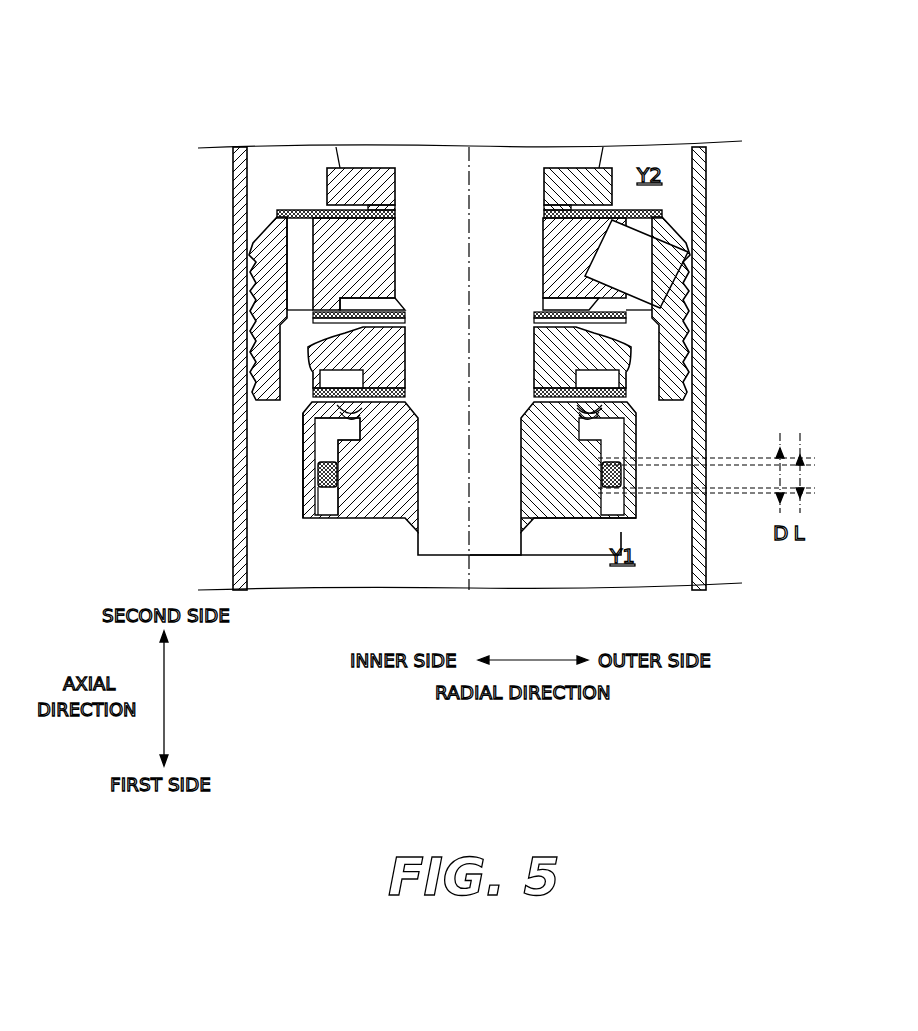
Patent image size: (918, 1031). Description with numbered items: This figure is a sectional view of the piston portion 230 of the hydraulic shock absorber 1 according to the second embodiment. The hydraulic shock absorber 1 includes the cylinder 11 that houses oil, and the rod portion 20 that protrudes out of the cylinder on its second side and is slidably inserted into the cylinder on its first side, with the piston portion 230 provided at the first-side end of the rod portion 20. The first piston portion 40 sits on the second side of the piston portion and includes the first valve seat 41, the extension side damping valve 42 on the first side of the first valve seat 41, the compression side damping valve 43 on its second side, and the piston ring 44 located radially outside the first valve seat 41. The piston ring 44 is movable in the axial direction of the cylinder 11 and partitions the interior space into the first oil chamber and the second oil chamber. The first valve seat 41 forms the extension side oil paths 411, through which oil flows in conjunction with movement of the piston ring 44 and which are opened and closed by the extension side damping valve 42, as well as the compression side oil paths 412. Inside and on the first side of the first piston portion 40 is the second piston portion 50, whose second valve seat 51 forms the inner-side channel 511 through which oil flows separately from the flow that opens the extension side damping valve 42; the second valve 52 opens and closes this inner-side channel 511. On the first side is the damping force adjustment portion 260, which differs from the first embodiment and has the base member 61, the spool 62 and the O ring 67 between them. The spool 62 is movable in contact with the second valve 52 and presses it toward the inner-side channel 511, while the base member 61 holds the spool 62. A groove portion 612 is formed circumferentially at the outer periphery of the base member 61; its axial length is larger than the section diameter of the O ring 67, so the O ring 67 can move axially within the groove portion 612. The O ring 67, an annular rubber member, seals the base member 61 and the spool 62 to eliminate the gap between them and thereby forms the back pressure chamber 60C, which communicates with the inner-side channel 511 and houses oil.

The hydraulic shock absorber 1 is at (200, 65).
The cylinder 11 is at (705, 200).
The rod portion 20 is at (430, 160).
The piston portion 230 is at (268, 160).
The first piston portion 40 is at (460, 285).
The first valve seat 41 is at (267, 313).
The extension side oil path 411 is at (692, 267).
The compression side oil path 412 is at (297, 278).
The extension side damping valve 42 is at (695, 300).
The compression side damping valve 43 is at (660, 213).
The piston ring 44 is at (692, 323).
The second piston portion 50 is at (300, 357).
The second valve seat 51 is at (305, 372).
The inner-side channel 511 is at (665, 370).
The second valve 52 is at (305, 395).
The back pressure chamber 60C is at (637, 423).
The base member 61 is at (630, 513).
The groove portion 612 is at (297, 495).
The spool 62 is at (297, 488).
The O ring 67 is at (297, 472).
The damping force adjustment portion 260 is at (287, 527).